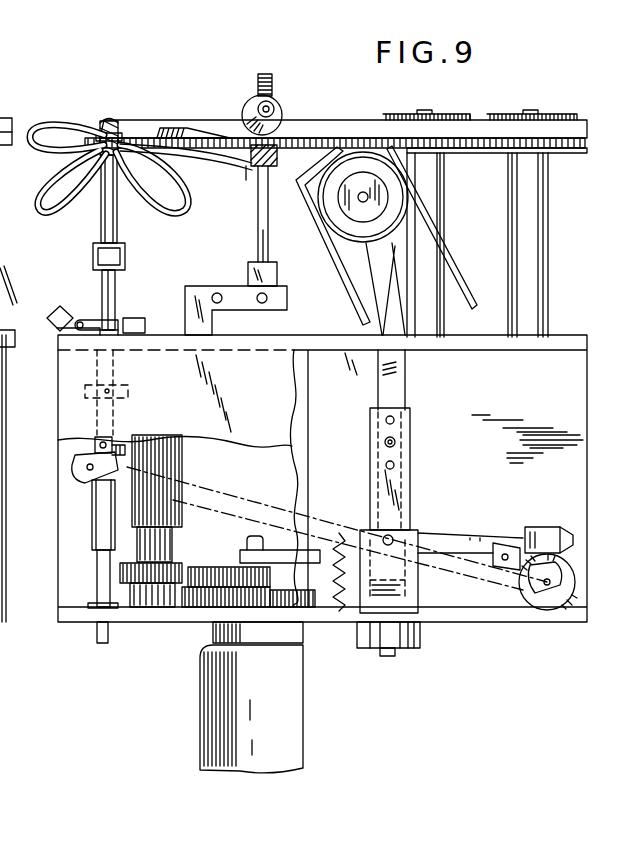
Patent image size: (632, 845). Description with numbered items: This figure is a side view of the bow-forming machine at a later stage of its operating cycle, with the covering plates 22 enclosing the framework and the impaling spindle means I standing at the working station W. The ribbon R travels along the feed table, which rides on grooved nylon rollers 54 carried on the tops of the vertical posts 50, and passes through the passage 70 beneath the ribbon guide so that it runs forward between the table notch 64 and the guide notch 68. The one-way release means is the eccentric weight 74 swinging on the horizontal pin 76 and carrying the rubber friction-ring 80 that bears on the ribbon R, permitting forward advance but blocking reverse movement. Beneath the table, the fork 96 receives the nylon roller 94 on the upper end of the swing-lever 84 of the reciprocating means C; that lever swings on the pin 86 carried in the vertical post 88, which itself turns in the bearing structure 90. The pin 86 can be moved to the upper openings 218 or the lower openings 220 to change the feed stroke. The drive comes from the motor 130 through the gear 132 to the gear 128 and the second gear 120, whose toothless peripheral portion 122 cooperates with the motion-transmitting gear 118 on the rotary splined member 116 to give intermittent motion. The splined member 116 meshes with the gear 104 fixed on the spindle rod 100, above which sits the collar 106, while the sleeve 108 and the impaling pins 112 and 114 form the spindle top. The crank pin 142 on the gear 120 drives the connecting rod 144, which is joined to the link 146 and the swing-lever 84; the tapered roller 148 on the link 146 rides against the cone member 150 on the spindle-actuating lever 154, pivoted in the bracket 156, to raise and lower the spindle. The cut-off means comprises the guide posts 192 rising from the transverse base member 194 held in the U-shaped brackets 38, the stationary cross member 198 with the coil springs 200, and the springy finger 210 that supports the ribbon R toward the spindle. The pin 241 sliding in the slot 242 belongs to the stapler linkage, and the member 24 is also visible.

The covering plate 22 is at (362, 325).
The support member 24 is at (5, 215).
The U-shaped bracket member 38 is at (288, 311).
The vertical post 50 is at (445, 325).
The nylon roller 54 is at (572, 119).
The longitudinal notch 64 is at (140, 148).
The notch 68 is at (100, 127).
The passage 70 is at (186, 148).
The weight 74 is at (284, 126).
The horizontal pin 76 is at (280, 103).
The endless friction-ring 80 is at (258, 103).
The swing-lever 84 is at (378, 392).
The pin 86 is at (397, 443).
The vertical post 88 is at (400, 487).
The bearing structure 90 is at (420, 634).
The nylon roller 94 is at (405, 200).
The fork 96 is at (448, 246).
The spindle member 100 is at (96, 635).
The gear 104 is at (95, 452).
The collar 106 is at (128, 394).
The sleeve 108 is at (118, 229).
The impaling pin 112 is at (108, 120).
The impaling pin 114 is at (114, 130).
The rotary splined member 116 is at (177, 449).
The motion-transmitting gear 118 is at (182, 564).
The second gear 120 is at (268, 579).
The peripheral portion 122 is at (206, 568).
The gear 128 is at (200, 610).
The motor 130 is at (212, 720).
The gear 132 is at (304, 626).
The crank pin 142 is at (255, 536).
The connecting rod 144 is at (446, 560).
The link 146 is at (468, 533).
The tapered roller 148 is at (540, 530).
The cone member 150 is at (560, 571).
The spindle-actuating lever 154 is at (566, 606).
The bracket 156 is at (365, 603).
The vertical guide post 192 is at (268, 222).
The transverse base member 194 is at (277, 277).
The transverse cross member 198 is at (280, 162).
The coil spring 200 is at (268, 80).
The springy finger 210 is at (247, 178).
The upper opening 218 is at (395, 420).
The lower opening 220 is at (386, 463).
The pin 241 is at (78, 320).
The slot 242 is at (118, 338).
The working station W is at (48, 101).
The impaling spindle means I is at (74, 282).
The ribbon R is at (338, 142).
The reciprocating means C is at (434, 386).